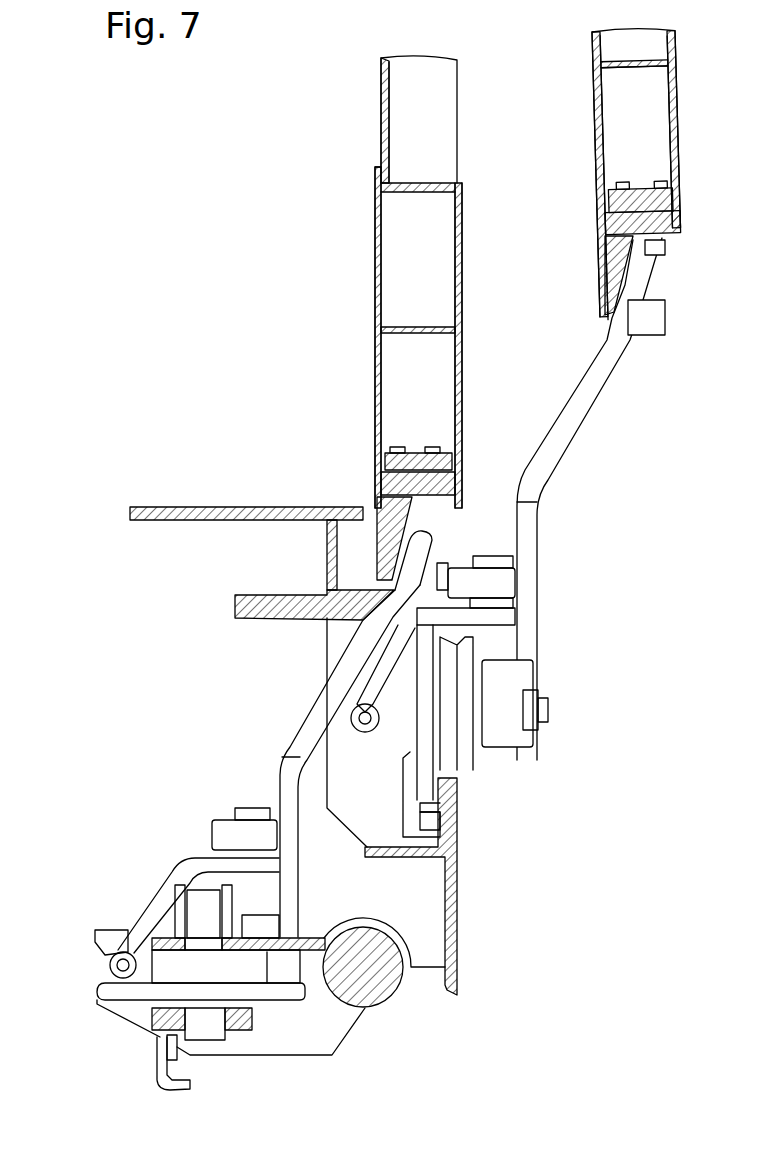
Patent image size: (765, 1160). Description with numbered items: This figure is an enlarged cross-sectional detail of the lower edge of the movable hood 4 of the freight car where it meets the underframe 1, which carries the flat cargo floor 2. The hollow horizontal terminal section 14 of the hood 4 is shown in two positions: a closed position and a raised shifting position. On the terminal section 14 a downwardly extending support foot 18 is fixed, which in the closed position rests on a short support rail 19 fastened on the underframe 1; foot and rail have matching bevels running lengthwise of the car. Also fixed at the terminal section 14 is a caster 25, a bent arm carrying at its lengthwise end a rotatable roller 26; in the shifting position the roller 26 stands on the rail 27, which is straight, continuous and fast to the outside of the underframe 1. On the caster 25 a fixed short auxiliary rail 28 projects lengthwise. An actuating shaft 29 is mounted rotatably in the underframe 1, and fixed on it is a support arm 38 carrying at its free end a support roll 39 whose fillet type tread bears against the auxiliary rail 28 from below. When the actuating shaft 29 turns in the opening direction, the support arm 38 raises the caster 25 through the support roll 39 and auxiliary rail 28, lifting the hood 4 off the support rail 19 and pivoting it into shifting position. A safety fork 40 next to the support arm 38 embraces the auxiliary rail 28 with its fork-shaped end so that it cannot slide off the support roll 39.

The underframe 1 is at (415, 888).
The cargo floor 2 is at (158, 506).
The hood 4 is at (419, 103).
The terminal section 14 is at (376, 237).
The support foot 18 is at (377, 500).
The support rail 19 is at (410, 556).
The caster 25 is at (333, 688).
The roller 26 is at (503, 640).
The rail 27 is at (450, 803).
The auxiliary rail 28 is at (366, 733).
The actuating shaft 29 is at (370, 963).
The support arm 38 is at (247, 1025).
The support roll 39 is at (133, 997).
The safety fork 40 is at (113, 938).